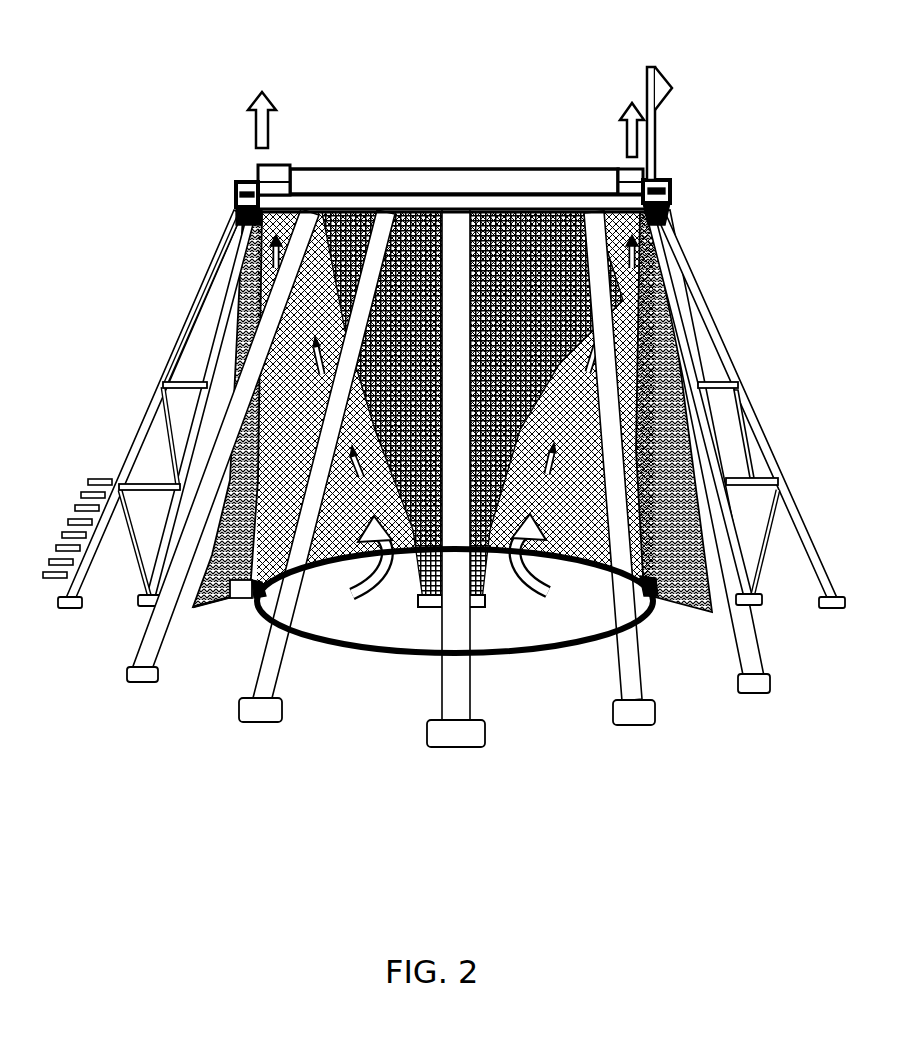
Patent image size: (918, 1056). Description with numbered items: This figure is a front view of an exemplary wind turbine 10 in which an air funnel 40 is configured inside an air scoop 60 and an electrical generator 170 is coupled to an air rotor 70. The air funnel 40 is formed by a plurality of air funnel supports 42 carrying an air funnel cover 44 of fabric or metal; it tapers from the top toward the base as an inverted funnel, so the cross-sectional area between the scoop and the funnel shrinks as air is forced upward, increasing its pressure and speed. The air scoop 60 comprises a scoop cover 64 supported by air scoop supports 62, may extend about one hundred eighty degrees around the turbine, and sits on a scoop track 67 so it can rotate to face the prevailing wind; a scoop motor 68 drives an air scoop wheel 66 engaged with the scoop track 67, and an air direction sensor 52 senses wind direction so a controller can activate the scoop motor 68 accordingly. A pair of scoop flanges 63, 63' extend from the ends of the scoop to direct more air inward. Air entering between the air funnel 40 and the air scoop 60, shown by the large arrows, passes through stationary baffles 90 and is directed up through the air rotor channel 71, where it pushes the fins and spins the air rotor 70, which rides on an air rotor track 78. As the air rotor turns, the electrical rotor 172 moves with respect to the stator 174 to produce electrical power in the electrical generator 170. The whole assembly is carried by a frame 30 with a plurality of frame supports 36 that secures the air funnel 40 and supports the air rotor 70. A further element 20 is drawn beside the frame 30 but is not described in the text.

The wind turbine 10 is at (150, 123).
The stairs 20 is at (90, 472).
The frame 30 is at (135, 433).
The frame supports 36 is at (167, 378).
The air funnel 40 is at (692, 352).
The air funnel supports 42 is at (676, 296).
The air funnel cover 44 is at (476, 212).
The air direction sensor 52 is at (656, 70).
The air scoop 60 is at (596, 648).
The air scoop supports 62 is at (258, 328).
The scoop flanges 63 is at (147, 612).
The side curtain panel 63' is at (727, 432).
The scoop cover 64 is at (330, 566).
The air scoop wheel 66 is at (236, 600).
The scoop track 67 is at (252, 600).
The scoop motor 68 is at (222, 605).
The air rotor 70 is at (272, 170).
The air rotor channel 71 is at (622, 155).
The air rotor track 78 is at (296, 172).
The baffles 90 is at (236, 210).
The electrical generator 170 is at (246, 182).
The electrical rotor 172 is at (660, 178).
The stator 174 is at (668, 186).